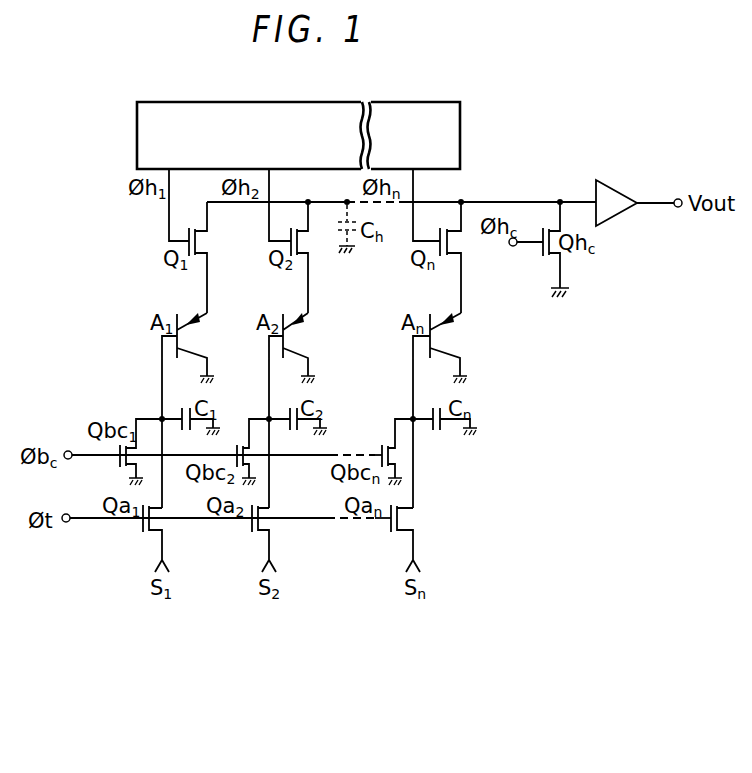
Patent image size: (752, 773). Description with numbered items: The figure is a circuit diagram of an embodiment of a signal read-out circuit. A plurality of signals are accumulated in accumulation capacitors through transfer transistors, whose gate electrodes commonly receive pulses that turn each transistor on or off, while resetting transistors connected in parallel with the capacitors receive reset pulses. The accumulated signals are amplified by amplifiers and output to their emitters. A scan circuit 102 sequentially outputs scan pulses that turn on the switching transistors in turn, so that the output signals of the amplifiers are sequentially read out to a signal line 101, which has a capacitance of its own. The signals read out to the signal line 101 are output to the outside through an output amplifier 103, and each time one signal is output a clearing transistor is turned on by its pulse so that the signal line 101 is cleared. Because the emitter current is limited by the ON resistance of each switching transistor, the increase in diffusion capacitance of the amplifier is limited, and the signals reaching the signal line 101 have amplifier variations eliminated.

The signal line 101 is at (516, 200).
The scan circuit 102 is at (425, 102).
The output amplifier 103 is at (618, 185).